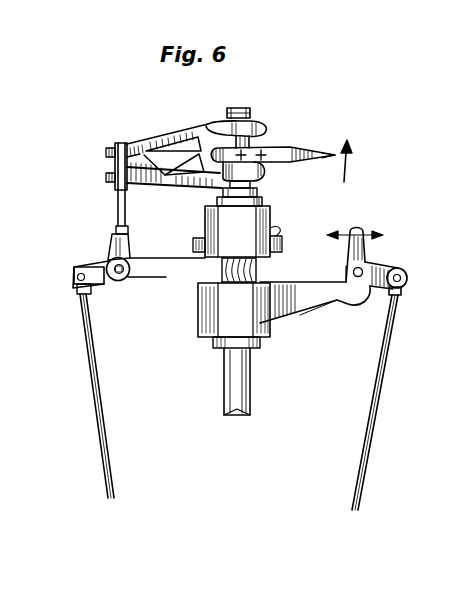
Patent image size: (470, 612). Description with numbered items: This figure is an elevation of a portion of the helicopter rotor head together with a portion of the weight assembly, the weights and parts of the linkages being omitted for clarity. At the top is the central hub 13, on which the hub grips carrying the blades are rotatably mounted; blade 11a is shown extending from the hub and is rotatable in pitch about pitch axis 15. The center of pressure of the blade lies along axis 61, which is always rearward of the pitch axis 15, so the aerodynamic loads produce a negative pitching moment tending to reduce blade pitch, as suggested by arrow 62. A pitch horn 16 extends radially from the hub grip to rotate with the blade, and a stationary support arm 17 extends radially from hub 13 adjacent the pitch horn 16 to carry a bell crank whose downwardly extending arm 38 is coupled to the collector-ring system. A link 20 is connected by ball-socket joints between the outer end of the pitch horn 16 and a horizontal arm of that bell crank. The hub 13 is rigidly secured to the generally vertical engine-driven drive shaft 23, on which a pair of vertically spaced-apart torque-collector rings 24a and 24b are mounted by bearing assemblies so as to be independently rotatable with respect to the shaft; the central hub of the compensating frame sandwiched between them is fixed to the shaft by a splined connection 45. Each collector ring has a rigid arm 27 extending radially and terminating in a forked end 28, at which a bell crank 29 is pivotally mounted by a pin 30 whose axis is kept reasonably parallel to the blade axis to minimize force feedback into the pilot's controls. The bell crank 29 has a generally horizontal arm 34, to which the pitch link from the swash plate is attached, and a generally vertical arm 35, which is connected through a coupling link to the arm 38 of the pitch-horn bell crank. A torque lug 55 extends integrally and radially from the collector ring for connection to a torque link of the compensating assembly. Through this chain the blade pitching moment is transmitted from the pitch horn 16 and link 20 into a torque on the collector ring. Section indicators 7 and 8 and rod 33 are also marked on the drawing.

The section line 7- 7 is at (48, 117).
The section line 8- 8 is at (168, 358).
The blade 11a is at (313, 149).
The central hub 13 is at (256, 122).
The pitch axis 15 is at (262, 143).
The pitch horn 16 is at (182, 132).
The stationary support arm 17 is at (161, 183).
The link 20 is at (112, 162).
The drive shaft 23 is at (251, 388).
The torque-collector ring 24a is at (205, 225).
The torque-collector ring 24b is at (270, 331).
The rigid arm 27 is at (333, 296).
The forked end 28 is at (132, 282).
The bell crank 29 is at (368, 263).
The pin 30 is at (350, 266).
The control rod 33 is at (107, 420).
The horizontal arm 34 is at (98, 287).
The vertical arm 35 is at (117, 245).
The downwardly extending arm 38 is at (117, 208).
The splined connection 45 is at (257, 270).
The torque lug 55 is at (212, 230).
The axis 61 is at (263, 164).
The arrow 62 is at (346, 166).